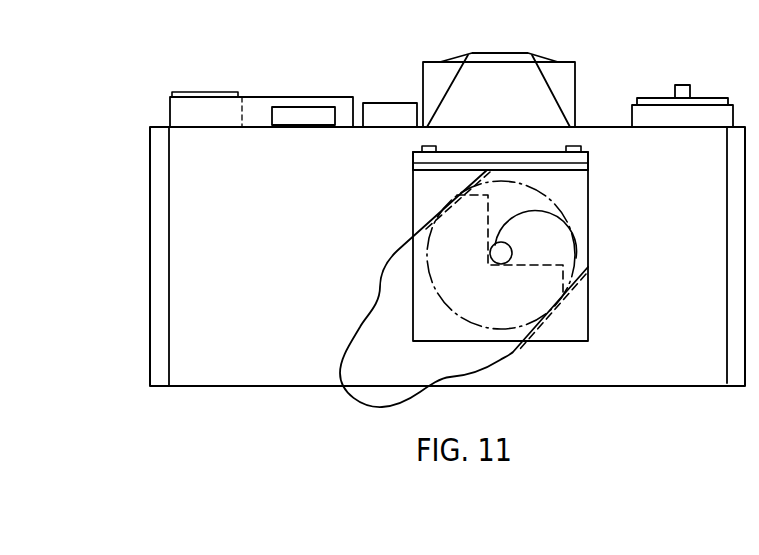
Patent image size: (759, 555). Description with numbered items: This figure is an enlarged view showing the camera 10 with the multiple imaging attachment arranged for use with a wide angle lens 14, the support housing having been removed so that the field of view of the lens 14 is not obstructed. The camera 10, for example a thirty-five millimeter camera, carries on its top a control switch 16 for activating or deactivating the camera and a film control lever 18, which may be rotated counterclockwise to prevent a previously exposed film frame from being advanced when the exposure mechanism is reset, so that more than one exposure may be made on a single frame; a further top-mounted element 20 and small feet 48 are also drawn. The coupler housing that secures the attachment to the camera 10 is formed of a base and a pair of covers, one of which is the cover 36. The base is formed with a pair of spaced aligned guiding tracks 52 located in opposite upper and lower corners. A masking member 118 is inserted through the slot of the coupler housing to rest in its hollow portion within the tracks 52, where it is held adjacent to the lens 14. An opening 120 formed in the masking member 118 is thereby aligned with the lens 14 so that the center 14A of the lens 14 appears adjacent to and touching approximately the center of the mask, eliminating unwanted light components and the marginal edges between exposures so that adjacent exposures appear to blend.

The camera 10 is at (410, 210).
The lens 14 is at (567, 222).
The center of the lens 14A is at (533, 232).
The control switch 16 is at (300, 115).
The film control lever 18 is at (190, 102).
The frame counter 20 is at (393, 113).
The cover 36 is at (523, 162).
The mounting feet 48 is at (436, 148).
The guiding tracks 52 is at (430, 219).
The masking member 118 is at (355, 357).
The opening 120 is at (584, 168).